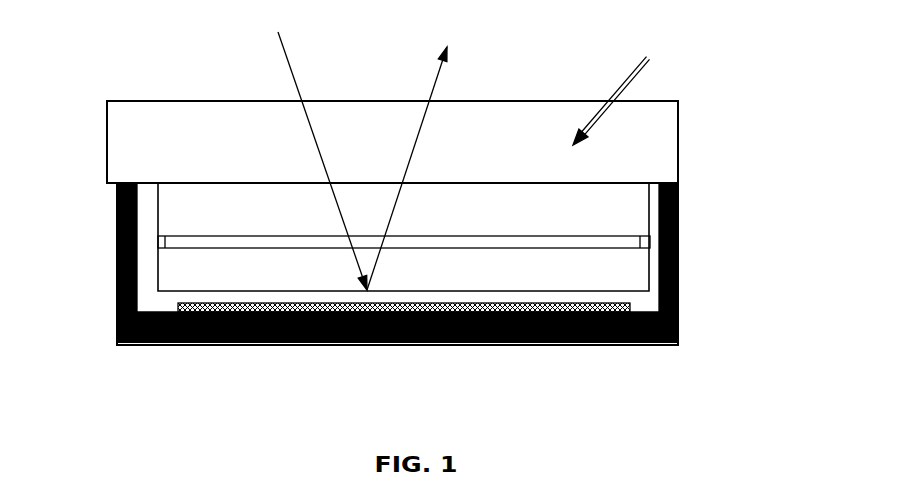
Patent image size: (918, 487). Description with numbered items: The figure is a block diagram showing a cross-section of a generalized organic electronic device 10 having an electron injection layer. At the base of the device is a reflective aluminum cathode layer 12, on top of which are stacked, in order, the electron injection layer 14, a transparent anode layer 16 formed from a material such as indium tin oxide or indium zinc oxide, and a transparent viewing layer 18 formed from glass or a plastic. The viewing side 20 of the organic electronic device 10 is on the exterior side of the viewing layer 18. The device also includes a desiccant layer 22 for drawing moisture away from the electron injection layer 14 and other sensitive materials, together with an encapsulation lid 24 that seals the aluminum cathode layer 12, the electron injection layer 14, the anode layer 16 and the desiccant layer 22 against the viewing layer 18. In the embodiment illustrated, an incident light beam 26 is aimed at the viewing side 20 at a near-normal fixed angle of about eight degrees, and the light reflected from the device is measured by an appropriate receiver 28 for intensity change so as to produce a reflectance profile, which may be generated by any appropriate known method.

The organic electronic device 10 is at (76, 146).
The reflective aluminum cathode layer 12 is at (220, 270).
The electron injection layer 14 is at (165, 239).
The transparent anode layer 16 is at (570, 207).
The transparent viewing layer 18 is at (611, 78).
The viewing side 20 is at (400, 83).
The desiccant layer 22 is at (233, 304).
The encapsulation lid 24 is at (663, 322).
The incident light beam 26 is at (298, 155).
The receiver 28 is at (428, 161).